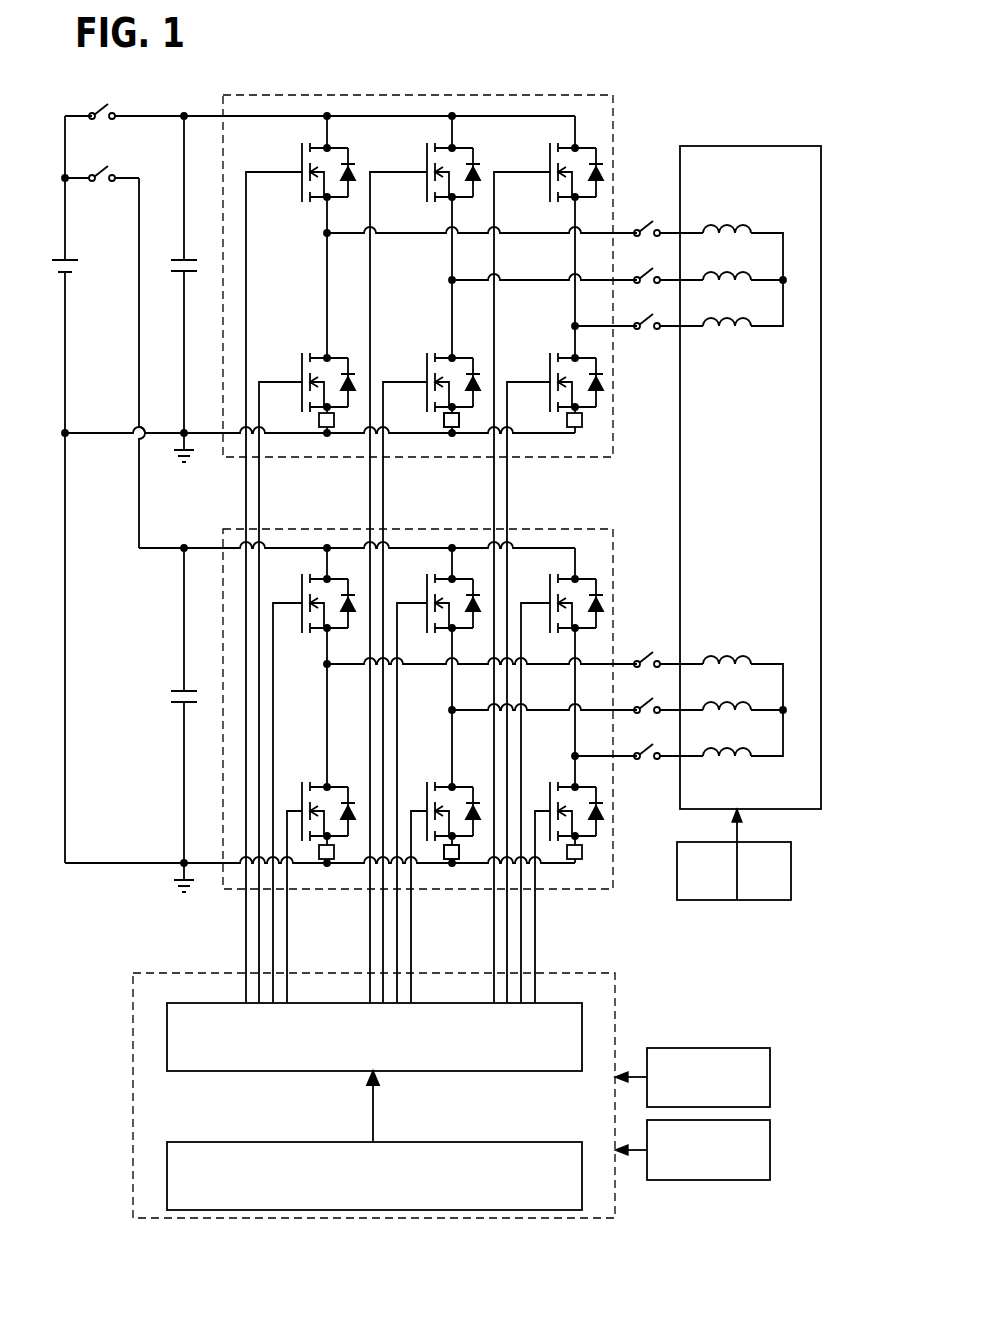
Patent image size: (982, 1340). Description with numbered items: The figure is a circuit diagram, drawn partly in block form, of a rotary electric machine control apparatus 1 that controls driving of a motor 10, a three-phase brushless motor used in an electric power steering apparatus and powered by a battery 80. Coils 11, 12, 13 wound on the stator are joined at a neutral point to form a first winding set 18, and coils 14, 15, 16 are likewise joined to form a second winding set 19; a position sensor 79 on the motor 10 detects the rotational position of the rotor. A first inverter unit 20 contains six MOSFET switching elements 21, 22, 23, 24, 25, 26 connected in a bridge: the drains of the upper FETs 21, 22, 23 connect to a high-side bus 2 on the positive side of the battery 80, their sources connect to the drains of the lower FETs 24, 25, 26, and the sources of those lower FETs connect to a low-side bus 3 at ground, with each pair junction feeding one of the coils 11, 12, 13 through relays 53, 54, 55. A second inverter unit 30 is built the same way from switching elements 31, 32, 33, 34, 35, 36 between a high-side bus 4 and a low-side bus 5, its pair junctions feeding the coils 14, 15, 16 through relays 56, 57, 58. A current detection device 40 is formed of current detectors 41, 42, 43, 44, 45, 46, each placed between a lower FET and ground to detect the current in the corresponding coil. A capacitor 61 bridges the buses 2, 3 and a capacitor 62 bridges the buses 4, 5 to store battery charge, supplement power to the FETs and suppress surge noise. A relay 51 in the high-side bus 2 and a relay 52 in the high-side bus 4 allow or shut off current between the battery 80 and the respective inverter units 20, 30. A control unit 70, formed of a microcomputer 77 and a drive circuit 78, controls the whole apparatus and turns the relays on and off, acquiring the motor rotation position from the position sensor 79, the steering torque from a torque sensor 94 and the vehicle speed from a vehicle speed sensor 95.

The rotary electric machine control apparatus 1 is at (114, 1160).
The high-side bus 2 is at (212, 112).
The low-side bus 3 is at (220, 431).
The high-side bus 4 is at (148, 551).
The low-side bus 5 is at (130, 866).
The motor 10 is at (821, 190).
The coil 11 is at (750, 222).
The coil 12 is at (750, 270).
The coil 13 is at (750, 322).
The coil 14 is at (750, 656).
The coil 15 is at (750, 702).
The coil 16 is at (750, 750).
The first winding set 18 is at (750, 378).
The second winding set 19 is at (750, 626).
The first inverter unit 20 is at (613, 113).
The switching element 21 is at (349, 148).
The switching element 22 is at (473, 148).
The switching element 23 is at (578, 145).
The switching element 24 is at (330, 355).
The switching element 25 is at (455, 355).
The switching element 26 is at (572, 355).
The second inverter unit 30 is at (234, 893).
The switching element 31 is at (318, 576).
The switching element 32 is at (441, 576).
The switching element 33 is at (564, 576).
The switching element 34 is at (331, 785).
The switching element 35 is at (455, 785).
The switching element 36 is at (573, 785).
The current detection device 40 is at (472, 422).
The current detector 41 is at (320, 428).
The current detector 42 is at (444, 428).
The current detector 43 is at (567, 428).
The current detector 44 is at (320, 860).
The current detector 45 is at (445, 860).
The current detector 46 is at (575, 860).
The relay 51 is at (106, 105).
The relay 52 is at (106, 167).
The relay 53 is at (650, 224).
The relay 54 is at (650, 271).
The relay 55 is at (650, 317).
The relay 56 is at (650, 654).
The relay 57 is at (650, 701).
The relay 58 is at (650, 747).
The capacitor 61 is at (178, 258).
The capacitor 62 is at (178, 690).
The control unit 70 is at (615, 1003).
The microcomputer 77 is at (582, 1200).
The drive circuit 78 is at (582, 1040).
The position sensor 79 is at (791, 870).
The battery 80 is at (62, 257).
The torque sensor 94 is at (770, 1077).
The vehicle speed sensor 95 is at (770, 1148).